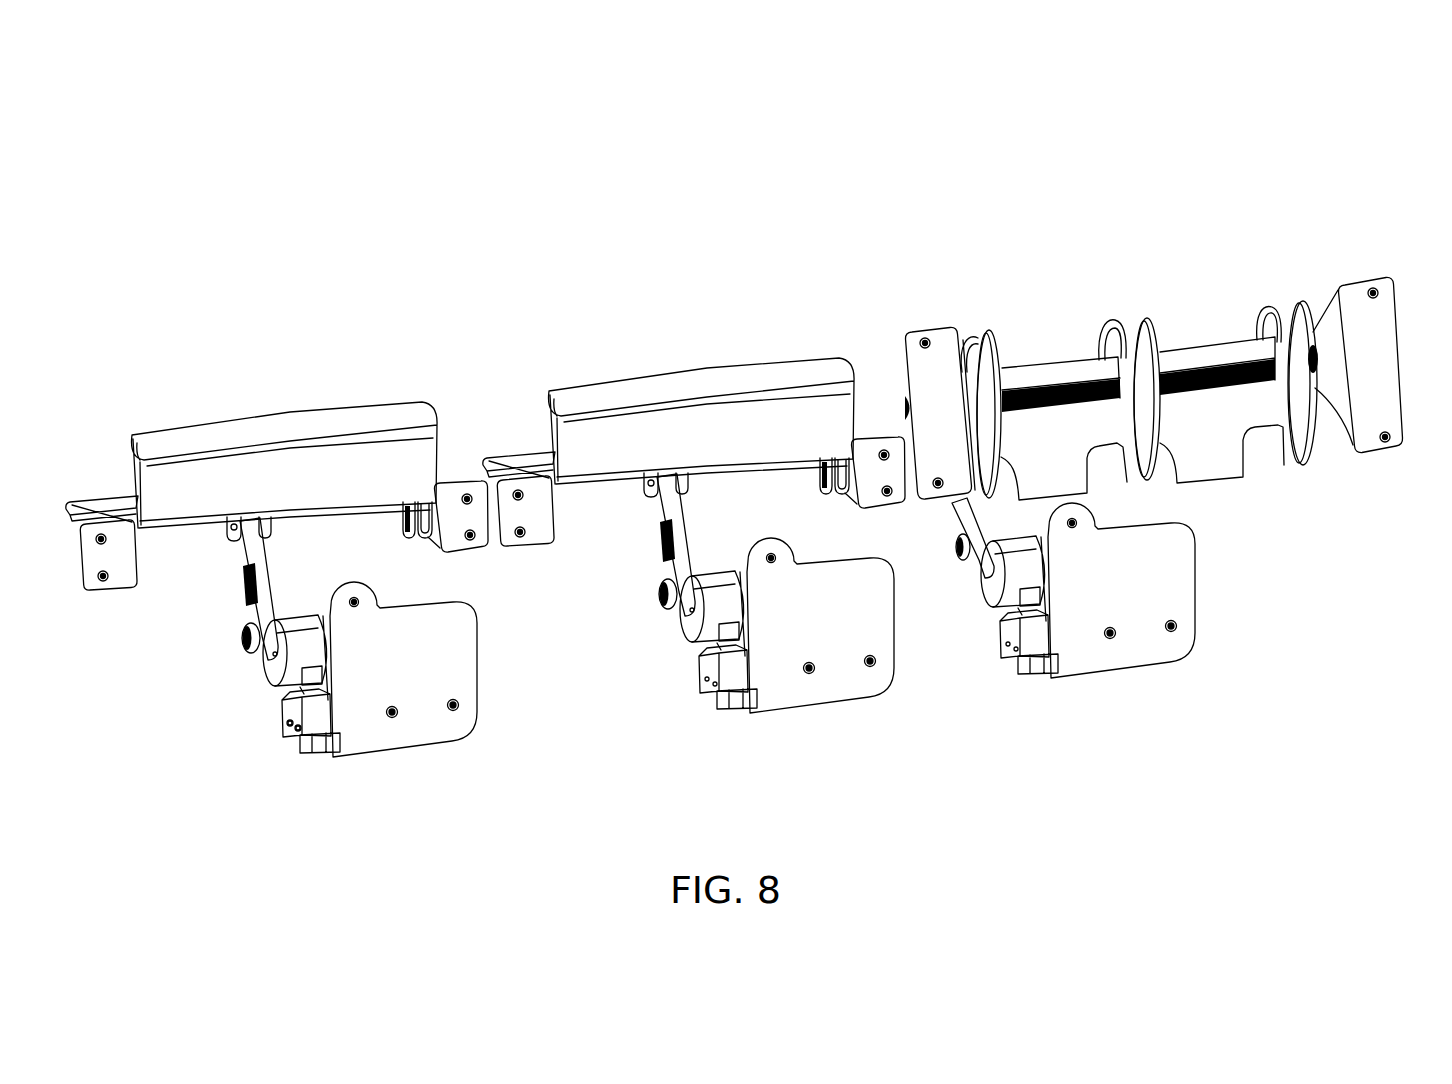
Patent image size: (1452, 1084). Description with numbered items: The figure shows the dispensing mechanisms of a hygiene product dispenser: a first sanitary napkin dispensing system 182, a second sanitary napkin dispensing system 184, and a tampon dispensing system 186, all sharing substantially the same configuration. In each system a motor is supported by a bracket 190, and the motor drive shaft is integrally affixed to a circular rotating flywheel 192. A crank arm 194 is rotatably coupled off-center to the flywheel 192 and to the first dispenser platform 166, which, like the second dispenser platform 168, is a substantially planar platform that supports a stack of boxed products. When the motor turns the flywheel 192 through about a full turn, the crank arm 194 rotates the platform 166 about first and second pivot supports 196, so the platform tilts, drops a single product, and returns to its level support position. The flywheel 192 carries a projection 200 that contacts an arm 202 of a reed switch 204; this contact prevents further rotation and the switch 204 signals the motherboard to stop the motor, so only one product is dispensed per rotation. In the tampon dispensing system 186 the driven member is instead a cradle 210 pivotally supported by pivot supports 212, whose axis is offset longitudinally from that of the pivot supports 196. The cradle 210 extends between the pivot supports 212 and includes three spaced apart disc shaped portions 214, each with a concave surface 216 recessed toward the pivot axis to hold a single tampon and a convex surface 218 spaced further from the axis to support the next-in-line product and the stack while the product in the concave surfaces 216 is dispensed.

The first dispenser platform 166 is at (118, 507).
The second dispenser platform 168 is at (530, 460).
The first sanitary napkin dispensing system 182 is at (279, 382).
The second sanitary napkin dispensing system 184 is at (701, 316).
The tampon dispensing system 186 is at (1172, 321).
The bracket 190 is at (420, 737).
The circular rotating flywheel 192 is at (990, 592).
The crank arm 194 is at (958, 528).
The pivot supports 196 is at (120, 566).
The projection 200 is at (304, 684).
The arm 202 is at (330, 737).
The reed switch 204 is at (293, 733).
The cradle 210 is at (1204, 294).
The pivot supports 212 is at (935, 330).
The disc shaped portions 214 is at (991, 326).
The concave surface 216 is at (1110, 318).
The convex surface 218 is at (1292, 466).